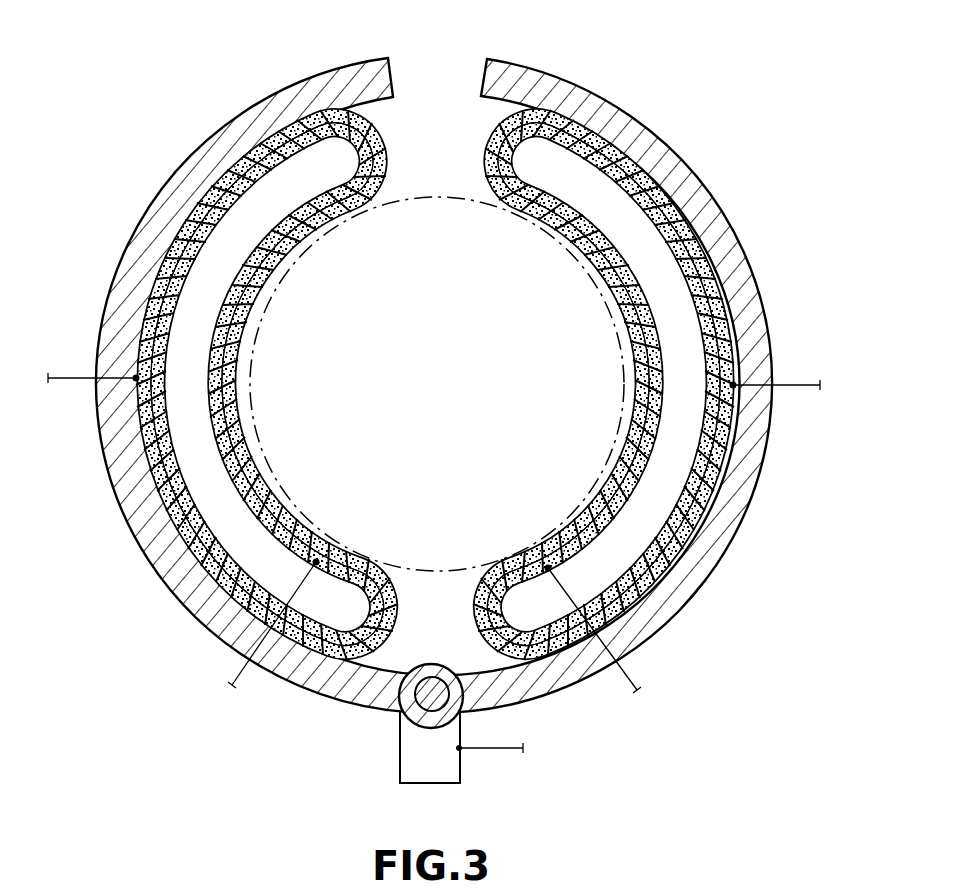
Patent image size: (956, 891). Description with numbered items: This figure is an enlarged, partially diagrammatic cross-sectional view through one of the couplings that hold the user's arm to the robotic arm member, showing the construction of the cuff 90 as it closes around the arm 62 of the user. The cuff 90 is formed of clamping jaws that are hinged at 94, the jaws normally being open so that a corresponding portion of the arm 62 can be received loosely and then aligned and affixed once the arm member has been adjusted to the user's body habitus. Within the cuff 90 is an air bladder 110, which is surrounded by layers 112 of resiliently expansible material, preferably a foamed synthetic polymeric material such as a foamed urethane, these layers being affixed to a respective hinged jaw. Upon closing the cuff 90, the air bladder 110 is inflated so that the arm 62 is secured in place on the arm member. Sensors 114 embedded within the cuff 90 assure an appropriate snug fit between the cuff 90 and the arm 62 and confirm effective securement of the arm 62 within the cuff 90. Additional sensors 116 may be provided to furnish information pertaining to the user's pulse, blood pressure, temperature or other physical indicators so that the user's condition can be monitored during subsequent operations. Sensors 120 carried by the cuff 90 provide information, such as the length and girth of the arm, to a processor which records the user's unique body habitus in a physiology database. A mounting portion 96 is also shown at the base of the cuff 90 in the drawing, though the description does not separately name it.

The cuff 90 is at (436, 408).
The hinge 94 is at (605, 101).
The mounting boss 96 is at (401, 720).
The sensors 120 is at (460, 751).
The air bladder 110 is at (233, 362).
The layers of resiliently expansible material 112 is at (274, 271).
The sensors 114 is at (788, 346).
The additional sensors 116 is at (318, 560).
The arm 62 is at (408, 188).